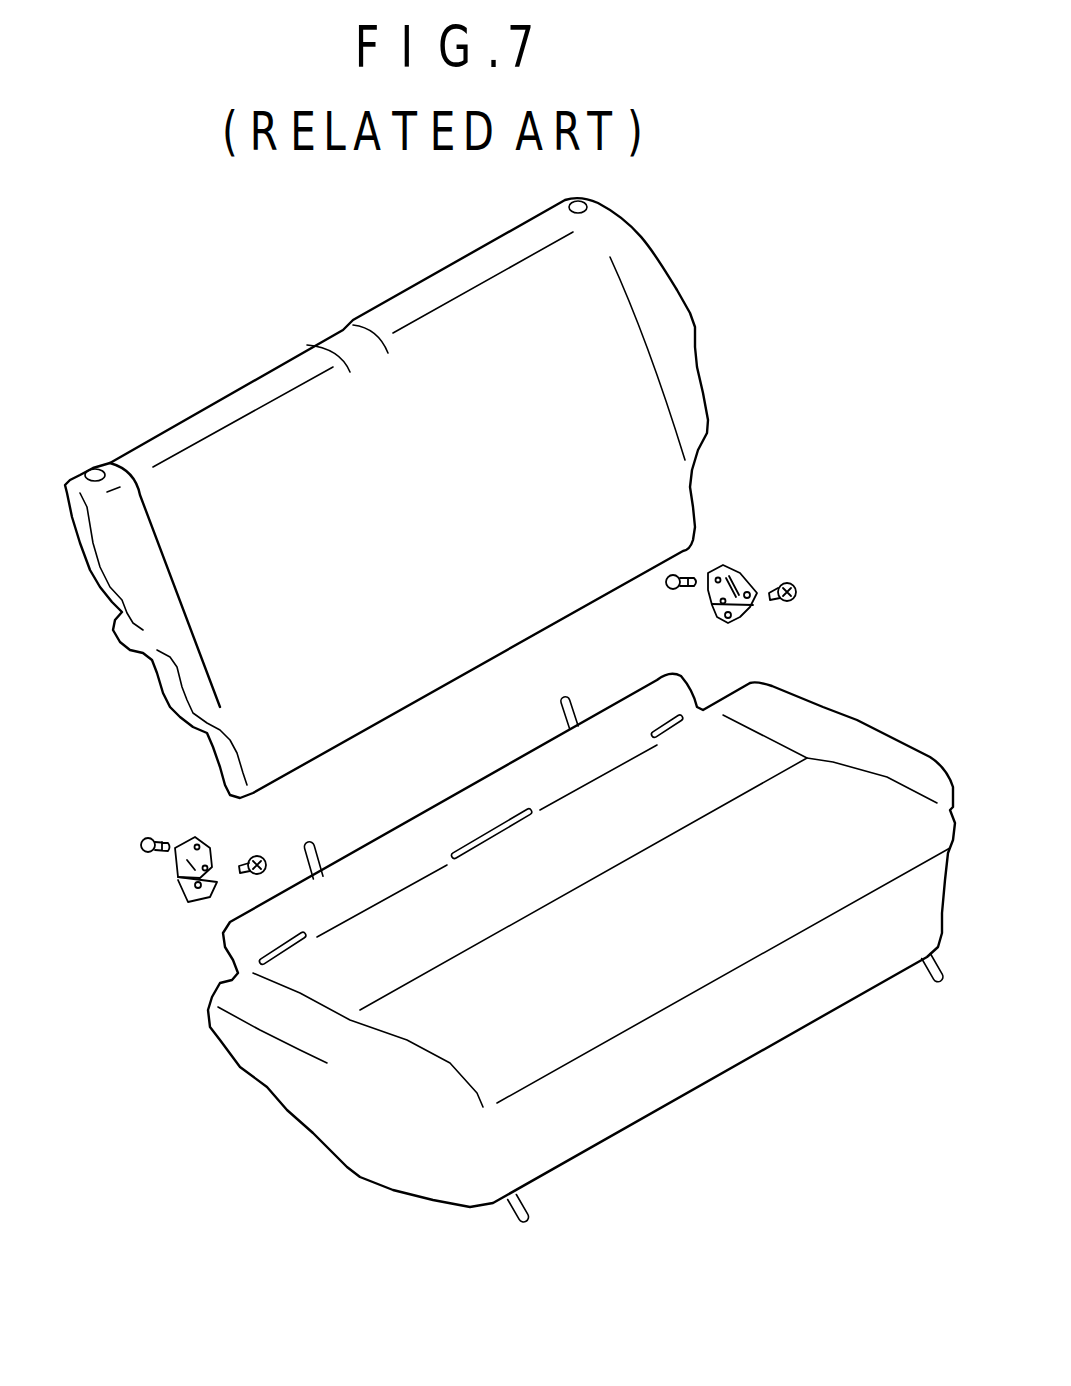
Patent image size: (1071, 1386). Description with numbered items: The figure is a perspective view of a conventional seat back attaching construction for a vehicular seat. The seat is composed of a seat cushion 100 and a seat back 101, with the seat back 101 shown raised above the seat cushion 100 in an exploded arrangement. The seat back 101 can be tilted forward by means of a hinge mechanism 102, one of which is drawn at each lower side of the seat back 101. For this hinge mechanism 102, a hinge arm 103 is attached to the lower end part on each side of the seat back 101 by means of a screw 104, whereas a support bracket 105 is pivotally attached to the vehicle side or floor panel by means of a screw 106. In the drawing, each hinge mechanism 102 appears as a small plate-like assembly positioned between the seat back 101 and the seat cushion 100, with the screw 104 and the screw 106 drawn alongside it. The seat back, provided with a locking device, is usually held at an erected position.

The seat cushion 100 is at (857, 740).
The seat back 101 is at (695, 317).
The hinge mechanism 102 is at (463, 733).
The hinge arm 103 is at (723, 570).
The screw 104 is at (667, 587).
The support bracket 105 is at (740, 622).
The screw 106 is at (797, 589).